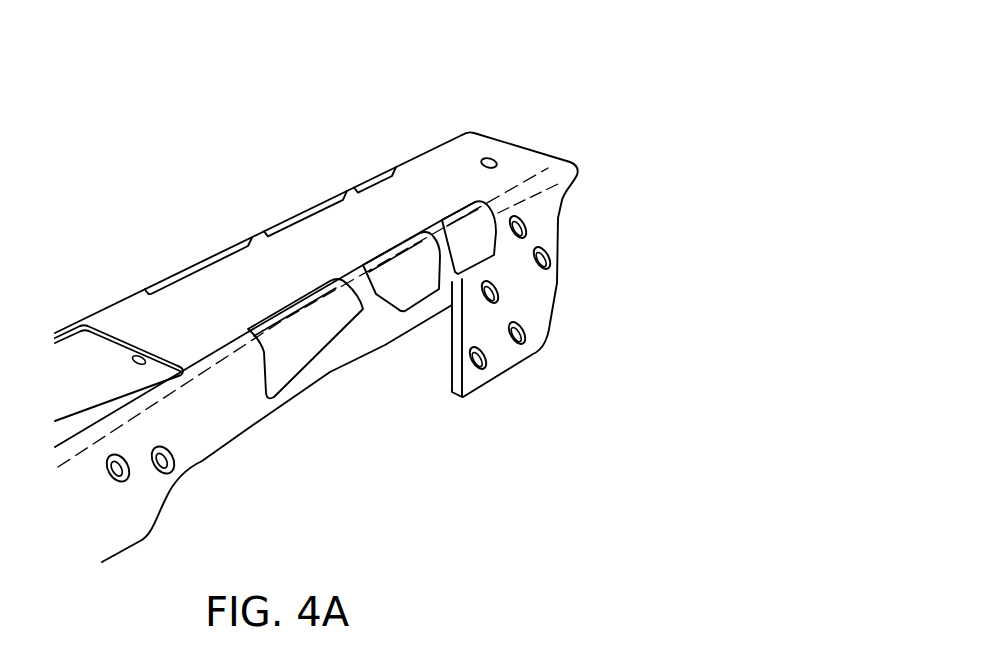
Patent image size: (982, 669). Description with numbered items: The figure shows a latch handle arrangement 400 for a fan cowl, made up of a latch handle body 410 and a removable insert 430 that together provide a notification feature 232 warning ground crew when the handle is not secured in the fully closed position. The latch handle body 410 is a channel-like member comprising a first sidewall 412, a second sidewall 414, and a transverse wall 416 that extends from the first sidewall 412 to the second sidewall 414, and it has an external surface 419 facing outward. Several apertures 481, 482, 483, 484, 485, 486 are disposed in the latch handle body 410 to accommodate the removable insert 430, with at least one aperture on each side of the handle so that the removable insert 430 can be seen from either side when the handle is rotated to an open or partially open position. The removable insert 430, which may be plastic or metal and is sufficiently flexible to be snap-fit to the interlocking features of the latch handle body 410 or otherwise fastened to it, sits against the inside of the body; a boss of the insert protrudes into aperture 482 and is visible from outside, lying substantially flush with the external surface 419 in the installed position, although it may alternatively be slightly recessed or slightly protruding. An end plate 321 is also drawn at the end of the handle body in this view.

The latch handle arrangement 400 is at (177, 178).
The latch handle body 410 is at (428, 187).
The first sidewall 412 is at (122, 372).
The second sidewall 414 is at (243, 412).
The transverse wall 416 is at (135, 332).
The external surface 419 is at (452, 185).
The end plate 321 is at (534, 135).
The aperture 481 is at (170, 285).
The aperture 483 is at (277, 227).
The aperture 485 is at (357, 187).
The aperture 482 is at (248, 328).
The notification feature 232 is at (307, 345).
The removable insert 430 is at (413, 283).
The aperture 486 is at (487, 263).
The aperture 484 is at (435, 298).